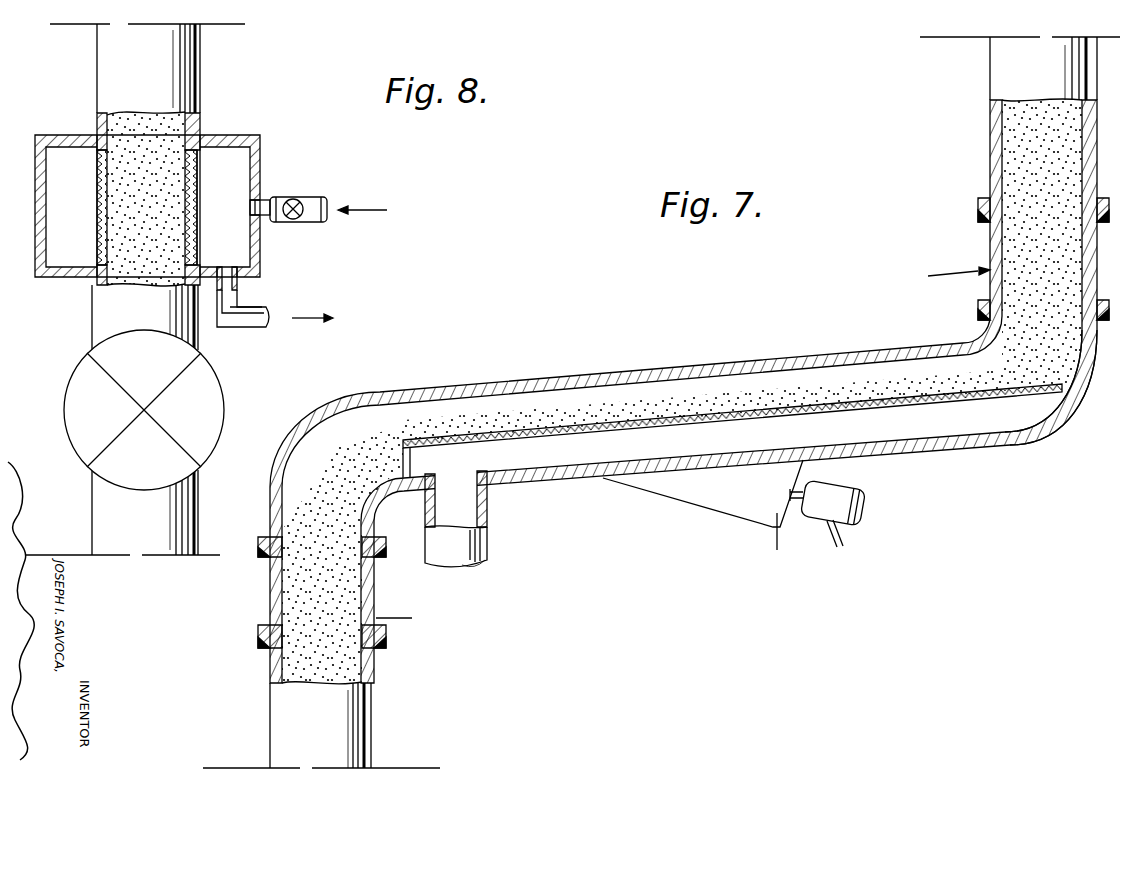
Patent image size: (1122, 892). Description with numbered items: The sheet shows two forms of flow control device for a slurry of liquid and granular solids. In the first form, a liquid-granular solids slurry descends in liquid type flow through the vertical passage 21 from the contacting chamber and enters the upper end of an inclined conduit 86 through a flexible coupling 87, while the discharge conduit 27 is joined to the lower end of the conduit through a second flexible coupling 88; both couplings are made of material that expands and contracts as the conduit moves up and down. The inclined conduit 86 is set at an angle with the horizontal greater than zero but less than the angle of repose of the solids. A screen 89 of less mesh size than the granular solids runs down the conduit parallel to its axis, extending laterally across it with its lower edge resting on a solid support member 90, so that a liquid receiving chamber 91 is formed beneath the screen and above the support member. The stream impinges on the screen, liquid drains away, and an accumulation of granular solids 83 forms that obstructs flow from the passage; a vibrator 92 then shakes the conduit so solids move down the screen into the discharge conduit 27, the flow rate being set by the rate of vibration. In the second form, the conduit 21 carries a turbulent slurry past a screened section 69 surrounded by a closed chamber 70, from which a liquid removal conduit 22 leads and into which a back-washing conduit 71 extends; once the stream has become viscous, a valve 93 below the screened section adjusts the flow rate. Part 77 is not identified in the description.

In FIG. 8, the passage 21 is at (204, 74).
In FIG. 7, the passage 21 is at (990, 157).
In FIG. 8, the liquid removal conduit 22 is at (268, 308).
In FIG. 7, the liquid removal conduit 22 is at (487, 545).
In FIG. 7, the discharge conduit 27 is at (358, 727).
In FIG. 8, the screen 69 is at (200, 190).
In FIG. 8, the closed chamber 70 is at (262, 146).
In FIG. 8, the back-washing fluid inlet conduit 71 is at (275, 198).
In FIG. 8, the valve 77 is at (320, 203).
In FIG. 7, the accumulation of granular solids 83 is at (1052, 368).
In FIG. 7, the inclined conduit 86 is at (505, 390).
In FIG. 7, the flexible coupling 87 is at (990, 232).
In FIG. 7, the flexible coupling 88 is at (270, 590).
In FIG. 7, the screen 89 is at (737, 410).
In FIG. 7, the solid support member 90 is at (403, 463).
In FIG. 7, the liquid receiving chamber 91 is at (945, 435).
In FIG. 7, the vibrator 92 is at (697, 500).
In FIG. 8, the valve 93 is at (208, 388).